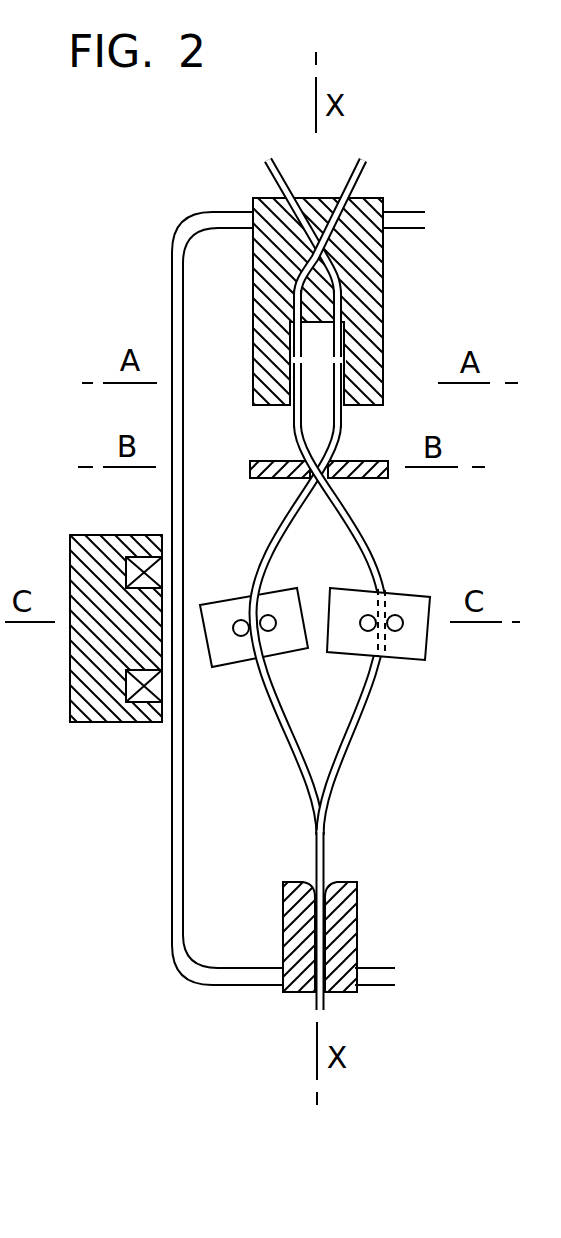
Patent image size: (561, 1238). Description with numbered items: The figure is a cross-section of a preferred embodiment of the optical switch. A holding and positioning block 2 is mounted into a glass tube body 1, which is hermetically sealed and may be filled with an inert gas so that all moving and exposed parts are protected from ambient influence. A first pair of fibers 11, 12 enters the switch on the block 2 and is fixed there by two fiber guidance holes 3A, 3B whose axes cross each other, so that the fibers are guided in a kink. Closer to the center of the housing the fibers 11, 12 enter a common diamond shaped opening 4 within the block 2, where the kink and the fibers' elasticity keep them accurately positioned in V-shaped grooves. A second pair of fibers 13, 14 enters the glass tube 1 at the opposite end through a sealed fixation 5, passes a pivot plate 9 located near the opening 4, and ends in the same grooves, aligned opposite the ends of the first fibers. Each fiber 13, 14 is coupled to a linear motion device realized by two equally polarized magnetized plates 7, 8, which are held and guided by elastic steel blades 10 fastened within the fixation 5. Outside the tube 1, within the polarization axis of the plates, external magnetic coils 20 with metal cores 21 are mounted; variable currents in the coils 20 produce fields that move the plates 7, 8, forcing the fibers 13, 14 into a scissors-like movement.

The glass tube body 1 is at (172, 835).
The holding and positioning block 2 is at (383, 283).
The fiber guidance hole 3A is at (278, 183).
The fiber guidance hole 3B is at (347, 240).
The diamond shaped opening 4 is at (320, 378).
The sealed fixation 5 is at (357, 920).
The magnetized plate 7 is at (217, 608).
The magnetized plate 8 is at (403, 600).
The pivot plate 9 is at (358, 478).
The elastic steel blades 10 is at (347, 770).
The fiber 11 is at (293, 313).
The fiber 12 is at (341, 342).
The fiber 13 is at (298, 430).
The fiber 14 is at (340, 438).
The external magnetic coils 20 is at (143, 555).
The metal cores 21 is at (77, 562).